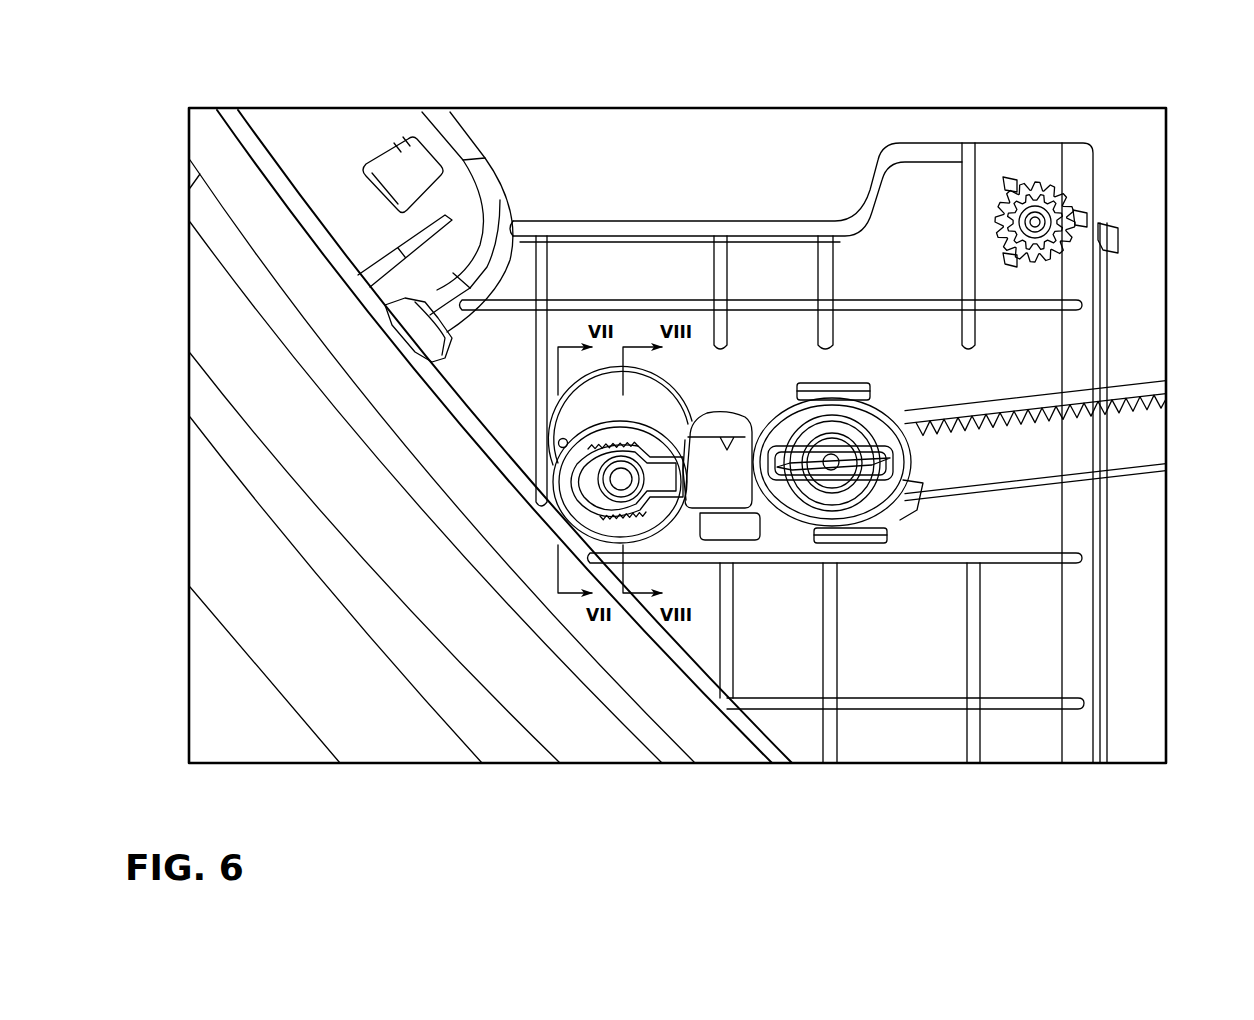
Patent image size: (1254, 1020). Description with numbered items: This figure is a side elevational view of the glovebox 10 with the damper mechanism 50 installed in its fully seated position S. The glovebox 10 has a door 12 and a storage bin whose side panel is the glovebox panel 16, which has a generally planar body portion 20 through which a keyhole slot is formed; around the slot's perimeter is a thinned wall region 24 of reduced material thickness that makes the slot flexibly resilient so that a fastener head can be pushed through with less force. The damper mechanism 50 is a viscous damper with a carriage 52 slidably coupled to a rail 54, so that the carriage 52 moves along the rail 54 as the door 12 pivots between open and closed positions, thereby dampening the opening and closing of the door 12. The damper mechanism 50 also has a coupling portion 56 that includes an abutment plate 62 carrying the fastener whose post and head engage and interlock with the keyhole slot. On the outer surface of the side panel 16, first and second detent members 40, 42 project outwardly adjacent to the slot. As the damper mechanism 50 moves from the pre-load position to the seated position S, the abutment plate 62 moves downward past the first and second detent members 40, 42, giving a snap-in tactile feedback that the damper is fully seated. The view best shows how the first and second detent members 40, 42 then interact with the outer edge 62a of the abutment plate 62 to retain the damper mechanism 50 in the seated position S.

The glovebox 10 is at (228, 720).
The door 12 is at (245, 653).
The glovebox panel 16 is at (1017, 597).
The generally planar body portion 20 is at (938, 374).
The thinned wall region 24 is at (570, 412).
The first detent member 40 is at (558, 443).
The second detent member 42 is at (687, 433).
The damper mechanism 50 is at (847, 385).
The carriage 52 is at (857, 513).
The rail 54 is at (1067, 467).
The coupling portion 56 is at (643, 500).
The abutment plate 62 is at (570, 492).
The outer edge 62a is at (570, 412).
The seated position S is at (890, 362).